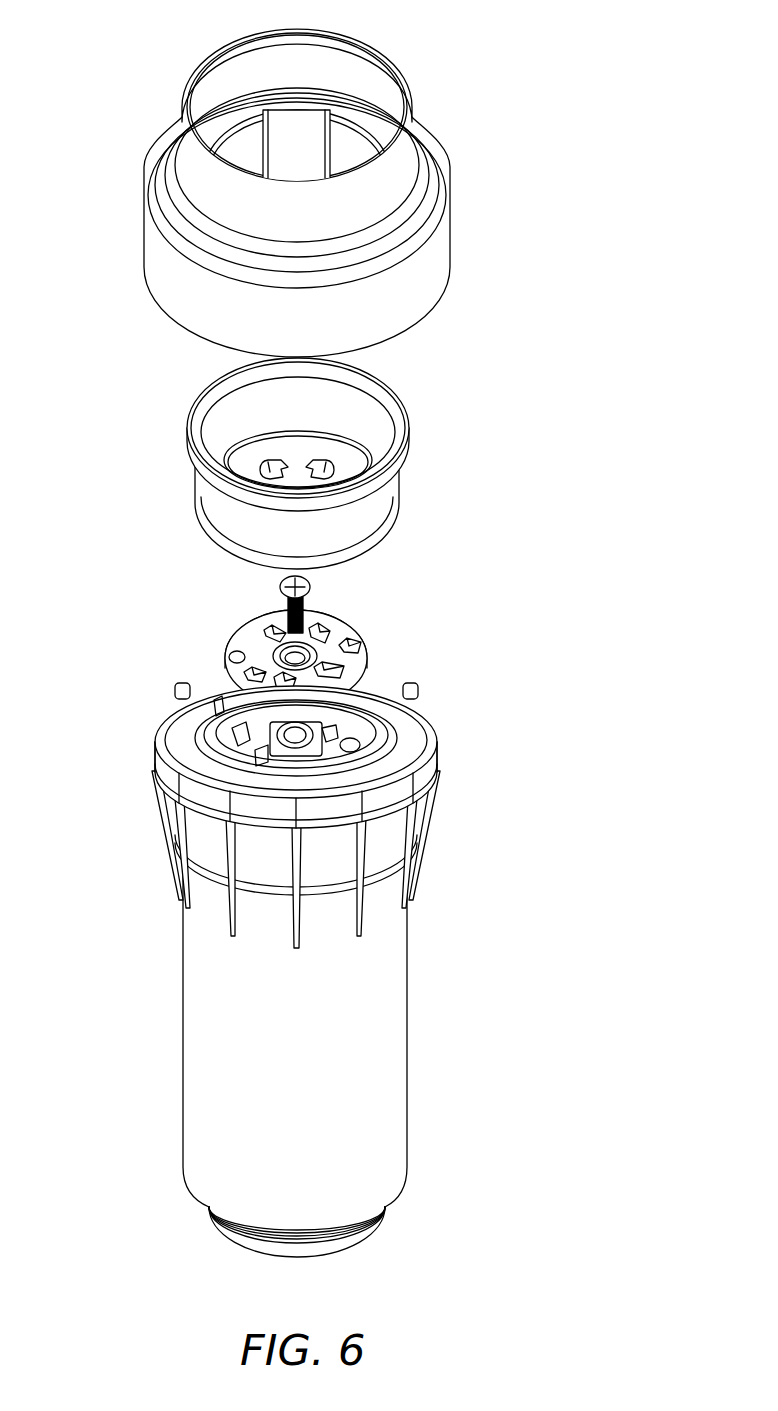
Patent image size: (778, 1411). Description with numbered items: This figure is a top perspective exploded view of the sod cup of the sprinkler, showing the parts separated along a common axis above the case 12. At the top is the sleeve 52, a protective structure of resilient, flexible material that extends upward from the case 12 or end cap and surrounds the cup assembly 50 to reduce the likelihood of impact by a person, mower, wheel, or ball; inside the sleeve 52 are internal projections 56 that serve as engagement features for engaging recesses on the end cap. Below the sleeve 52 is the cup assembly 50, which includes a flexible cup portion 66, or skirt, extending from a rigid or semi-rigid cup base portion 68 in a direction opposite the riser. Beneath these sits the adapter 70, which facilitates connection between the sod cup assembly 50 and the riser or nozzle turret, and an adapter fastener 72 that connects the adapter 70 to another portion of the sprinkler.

The case 12 is at (398, 1020).
The cup assembly 50 is at (307, 360).
The sleeve 52 is at (355, 185).
The internal projections 56 is at (302, 133).
The cup portion 66 is at (285, 463).
The cup base portion 68 is at (293, 486).
The adapter 70 is at (245, 627).
The adapter fastener 72 is at (308, 597).